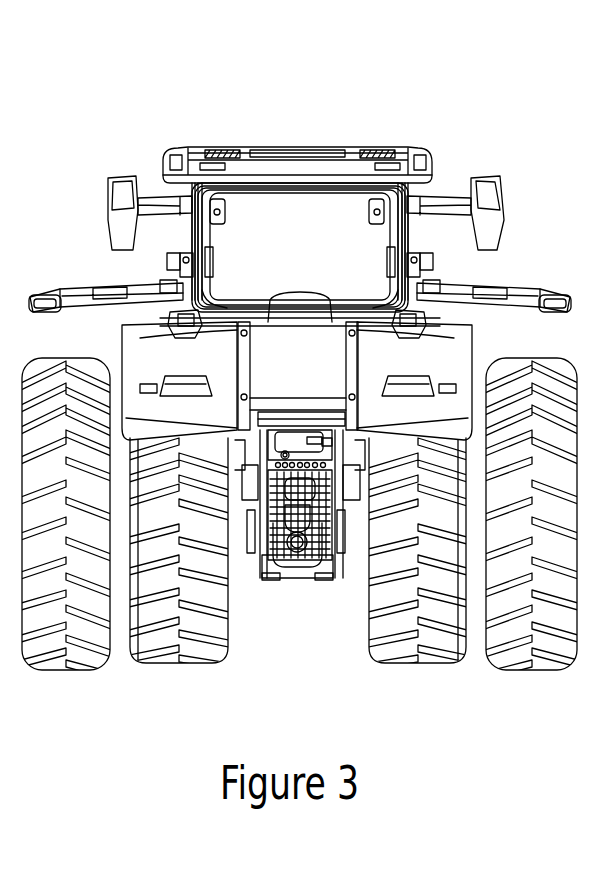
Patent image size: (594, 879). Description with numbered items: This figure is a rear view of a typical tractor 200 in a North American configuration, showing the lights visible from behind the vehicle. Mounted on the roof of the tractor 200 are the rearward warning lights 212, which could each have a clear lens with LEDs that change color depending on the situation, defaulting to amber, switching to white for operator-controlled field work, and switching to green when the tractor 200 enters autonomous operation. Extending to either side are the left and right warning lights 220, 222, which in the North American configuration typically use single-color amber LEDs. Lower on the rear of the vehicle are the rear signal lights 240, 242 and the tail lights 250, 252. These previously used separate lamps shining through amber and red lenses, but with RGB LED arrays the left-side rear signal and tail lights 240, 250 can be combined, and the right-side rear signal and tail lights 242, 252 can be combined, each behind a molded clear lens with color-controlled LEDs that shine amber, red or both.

The tractor 200 is at (291, 111).
The rearward warning lights 212 is at (200, 167).
The left warning light 220 is at (50, 297).
The right warning light 222 is at (557, 293).
The left rear signal light 240 is at (182, 327).
The right rear signal light 242 is at (411, 332).
The left tail light 250 is at (160, 329).
The right tail light 252 is at (466, 328).